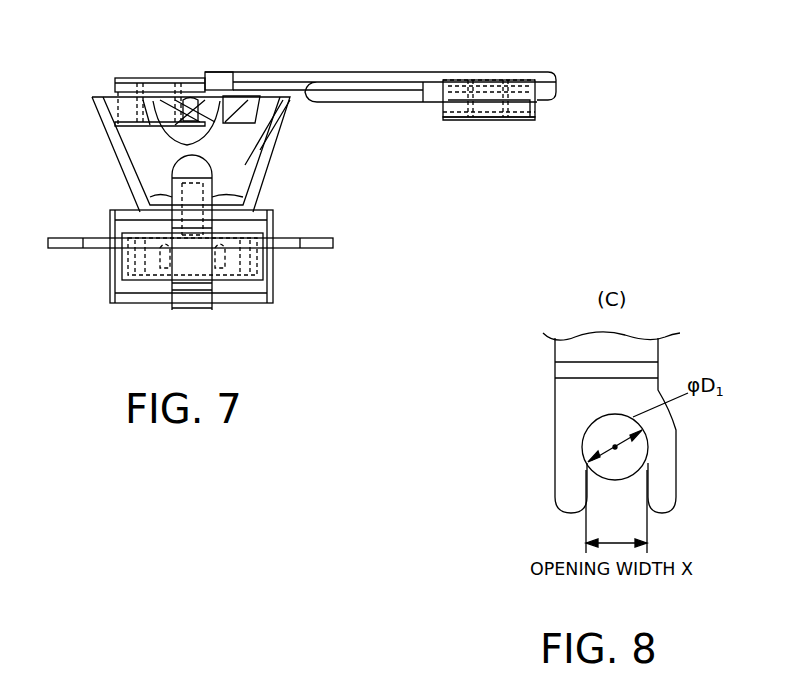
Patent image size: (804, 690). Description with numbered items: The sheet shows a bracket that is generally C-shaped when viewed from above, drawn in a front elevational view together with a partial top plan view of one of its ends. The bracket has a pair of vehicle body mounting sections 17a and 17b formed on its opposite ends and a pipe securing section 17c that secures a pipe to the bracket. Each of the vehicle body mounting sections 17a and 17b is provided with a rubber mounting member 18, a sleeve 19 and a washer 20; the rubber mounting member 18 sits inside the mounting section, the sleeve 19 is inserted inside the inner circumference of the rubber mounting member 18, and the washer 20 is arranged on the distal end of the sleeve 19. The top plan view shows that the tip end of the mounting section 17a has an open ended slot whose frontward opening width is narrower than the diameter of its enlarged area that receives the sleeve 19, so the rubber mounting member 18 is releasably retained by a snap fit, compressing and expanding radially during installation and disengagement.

In FIG. 7, the vehicle body mounting section 17a is at (167, 98).
In FIG. 8, the vehicle body mounting section 17a is at (640, 445).
In FIG. 7, the vehicle body mounting section 17b is at (499, 72).
In FIG. 7, the pipe securing section 17c is at (278, 262).
In FIG. 7, the rubber mounting member 18 is at (115, 87).
In FIG. 7, the sleeve 19 is at (127, 79).
In FIG. 7, the washer 20 is at (112, 141).